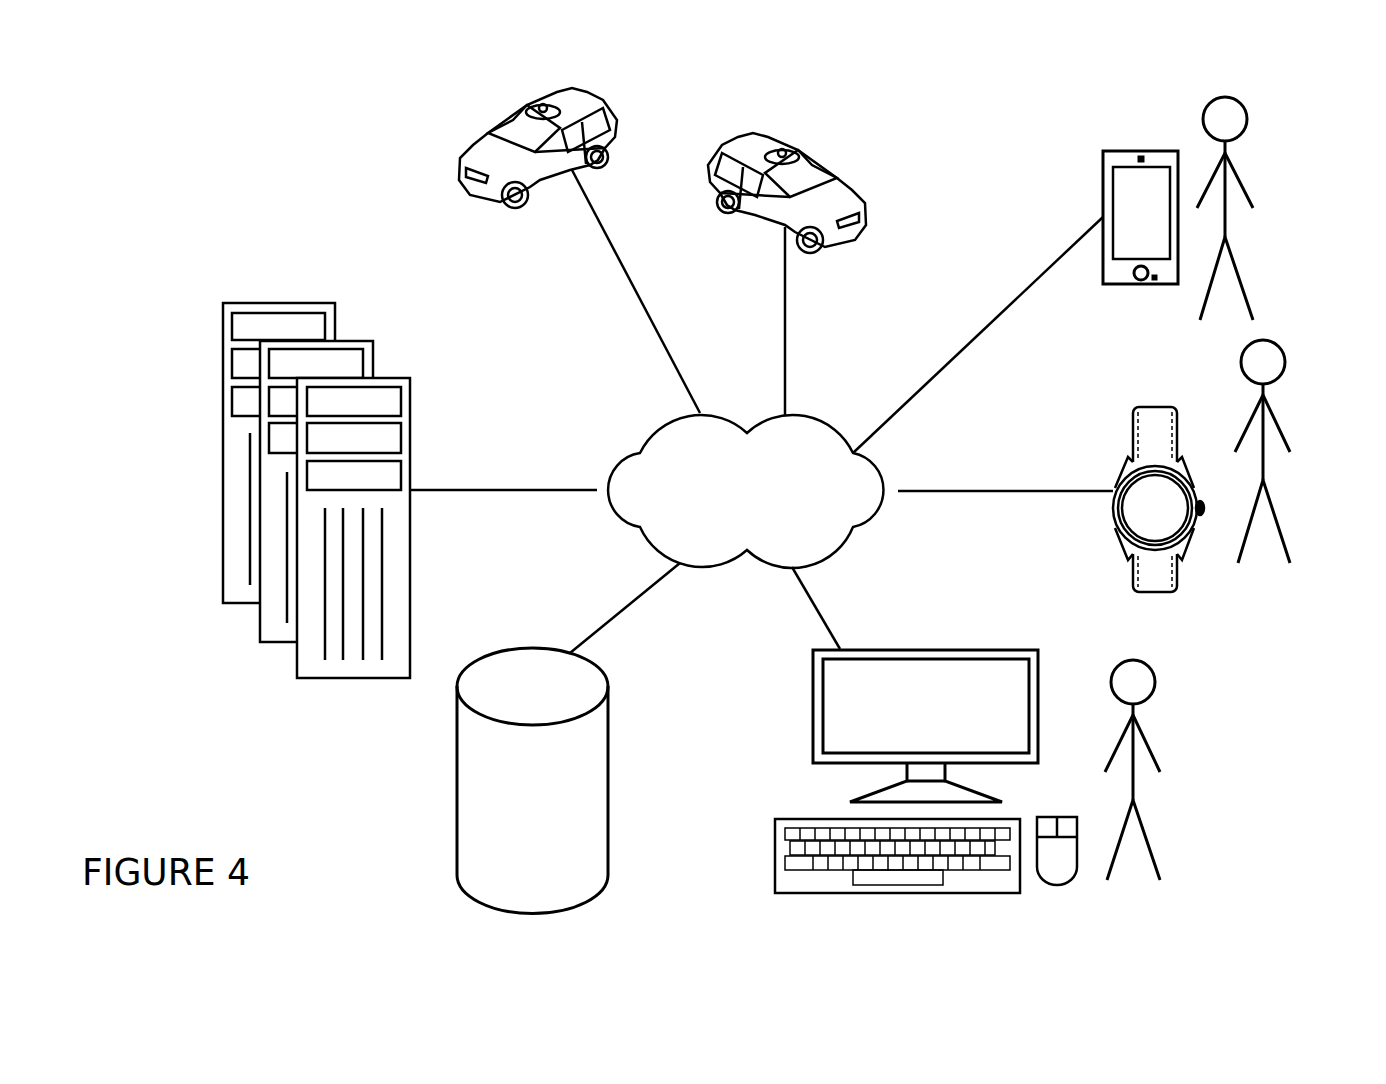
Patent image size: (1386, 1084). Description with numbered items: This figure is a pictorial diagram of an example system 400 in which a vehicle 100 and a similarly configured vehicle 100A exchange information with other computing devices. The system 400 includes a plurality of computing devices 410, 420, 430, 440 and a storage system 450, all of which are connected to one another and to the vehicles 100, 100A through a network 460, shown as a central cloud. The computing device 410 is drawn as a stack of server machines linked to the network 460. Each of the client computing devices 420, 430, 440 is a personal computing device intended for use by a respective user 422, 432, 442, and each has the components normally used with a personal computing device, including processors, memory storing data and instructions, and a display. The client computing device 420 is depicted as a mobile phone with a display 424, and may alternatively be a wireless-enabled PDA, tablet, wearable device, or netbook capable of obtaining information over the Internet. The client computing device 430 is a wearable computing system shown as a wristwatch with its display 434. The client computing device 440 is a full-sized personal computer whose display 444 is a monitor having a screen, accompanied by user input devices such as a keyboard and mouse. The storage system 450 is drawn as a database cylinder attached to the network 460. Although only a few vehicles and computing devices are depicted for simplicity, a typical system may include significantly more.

The system 400 is at (187, 830).
The vehicle 100 is at (455, 178).
The vehicle 100A is at (870, 208).
The computing device 410 is at (410, 425).
The client computing device 420 is at (1090, 228).
The user 422 is at (1227, 223).
The display 424 is at (1105, 165).
The client computing device 430 is at (1116, 509).
The user 432 is at (1265, 465).
The display 434 is at (1197, 522).
The client computing device 440 is at (956, 735).
The user 442 is at (1133, 785).
The display 444 is at (1030, 678).
The storage system 450 is at (608, 790).
The network 460 is at (607, 517).